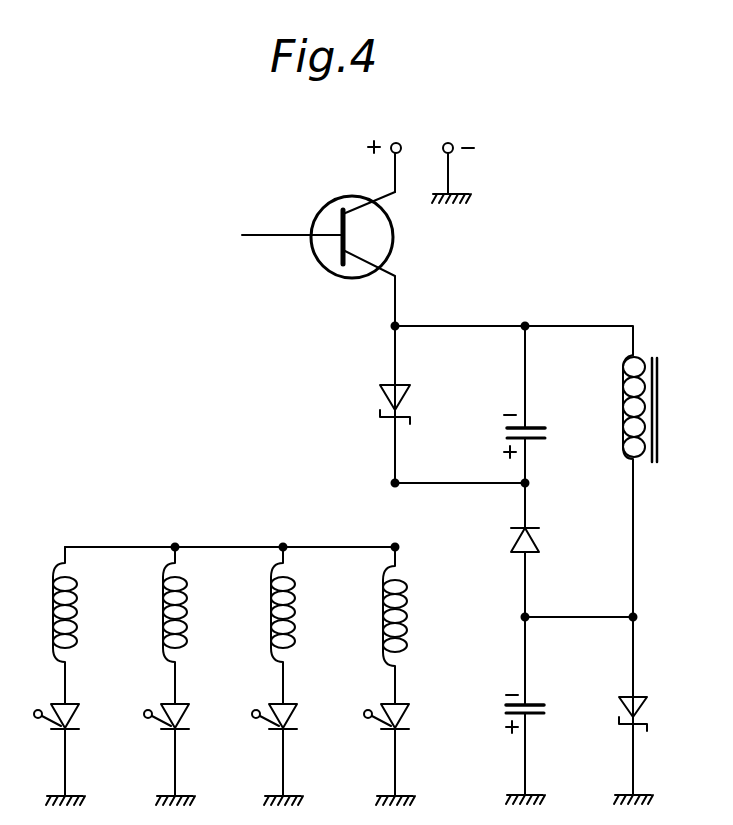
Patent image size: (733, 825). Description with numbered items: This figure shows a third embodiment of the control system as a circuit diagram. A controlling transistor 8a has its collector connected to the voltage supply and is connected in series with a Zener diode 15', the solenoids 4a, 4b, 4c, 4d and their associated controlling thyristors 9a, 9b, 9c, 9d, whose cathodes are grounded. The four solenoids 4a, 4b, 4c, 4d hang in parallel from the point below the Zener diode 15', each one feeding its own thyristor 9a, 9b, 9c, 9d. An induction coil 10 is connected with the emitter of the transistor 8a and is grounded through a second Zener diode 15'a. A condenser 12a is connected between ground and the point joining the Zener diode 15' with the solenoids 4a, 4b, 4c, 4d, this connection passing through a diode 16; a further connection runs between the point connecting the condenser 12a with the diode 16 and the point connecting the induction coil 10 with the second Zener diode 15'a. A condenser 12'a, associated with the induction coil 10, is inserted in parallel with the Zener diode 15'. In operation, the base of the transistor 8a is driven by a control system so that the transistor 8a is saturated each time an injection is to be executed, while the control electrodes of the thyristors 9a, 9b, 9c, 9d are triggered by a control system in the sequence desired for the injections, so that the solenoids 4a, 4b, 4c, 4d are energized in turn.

The controlling transistor 8a is at (322, 212).
The Zener diode 15' is at (365, 404).
The condenser 12'a is at (550, 404).
The induction coil 10 is at (658, 416).
The diode 16 is at (540, 546).
The condenser 12a is at (536, 706).
The second Zener diode 15'a is at (658, 710).
The solenoid 4a is at (53, 634).
The solenoid 4b is at (163, 628).
The solenoid 4c is at (271, 633).
The solenoid 4d is at (382, 640).
The controlling thyristor 9a is at (80, 716).
The controlling thyristor 9b is at (190, 716).
The controlling thyristor 9c is at (298, 716).
The controlling thyristor 9d is at (409, 716).